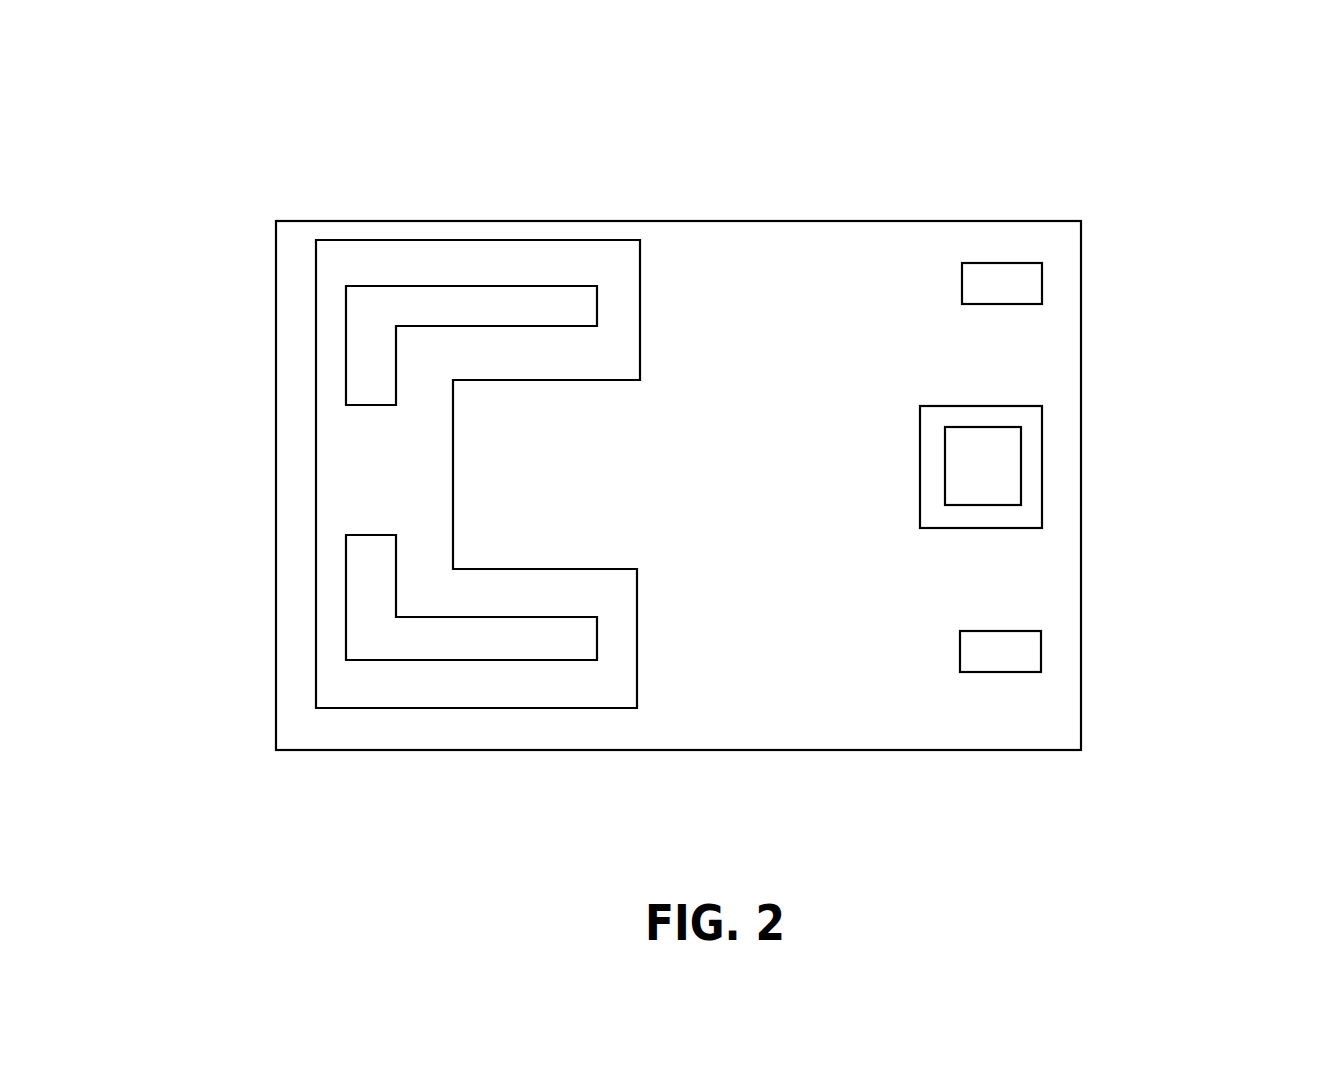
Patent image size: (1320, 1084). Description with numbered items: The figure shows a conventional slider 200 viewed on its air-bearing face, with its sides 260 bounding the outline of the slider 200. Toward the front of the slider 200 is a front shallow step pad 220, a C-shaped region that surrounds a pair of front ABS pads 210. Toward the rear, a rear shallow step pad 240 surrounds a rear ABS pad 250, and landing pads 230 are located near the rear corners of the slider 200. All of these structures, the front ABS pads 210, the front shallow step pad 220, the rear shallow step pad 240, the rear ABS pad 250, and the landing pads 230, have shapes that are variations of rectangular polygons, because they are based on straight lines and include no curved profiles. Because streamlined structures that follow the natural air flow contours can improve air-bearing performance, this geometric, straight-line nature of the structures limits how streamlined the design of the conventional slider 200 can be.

The conventional slider 200 is at (1028, 132).
The front ABS pads 210 is at (375, 566).
The front shallow step pad 220 is at (405, 521).
The landing pads 230 is at (1000, 653).
The rear shallow step pad 240 is at (1002, 413).
The rear ABS pad 250 is at (1000, 473).
The sides 260 is at (760, 221).